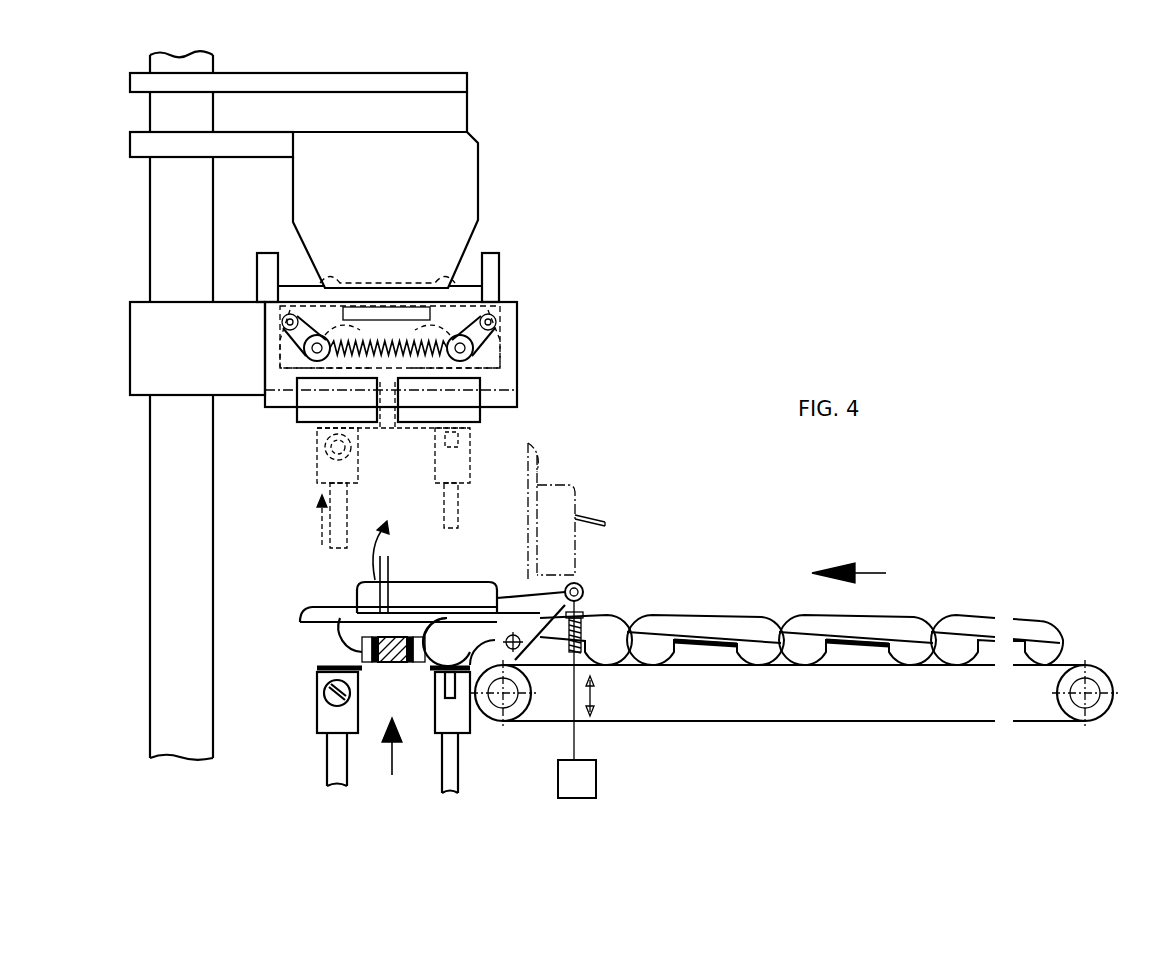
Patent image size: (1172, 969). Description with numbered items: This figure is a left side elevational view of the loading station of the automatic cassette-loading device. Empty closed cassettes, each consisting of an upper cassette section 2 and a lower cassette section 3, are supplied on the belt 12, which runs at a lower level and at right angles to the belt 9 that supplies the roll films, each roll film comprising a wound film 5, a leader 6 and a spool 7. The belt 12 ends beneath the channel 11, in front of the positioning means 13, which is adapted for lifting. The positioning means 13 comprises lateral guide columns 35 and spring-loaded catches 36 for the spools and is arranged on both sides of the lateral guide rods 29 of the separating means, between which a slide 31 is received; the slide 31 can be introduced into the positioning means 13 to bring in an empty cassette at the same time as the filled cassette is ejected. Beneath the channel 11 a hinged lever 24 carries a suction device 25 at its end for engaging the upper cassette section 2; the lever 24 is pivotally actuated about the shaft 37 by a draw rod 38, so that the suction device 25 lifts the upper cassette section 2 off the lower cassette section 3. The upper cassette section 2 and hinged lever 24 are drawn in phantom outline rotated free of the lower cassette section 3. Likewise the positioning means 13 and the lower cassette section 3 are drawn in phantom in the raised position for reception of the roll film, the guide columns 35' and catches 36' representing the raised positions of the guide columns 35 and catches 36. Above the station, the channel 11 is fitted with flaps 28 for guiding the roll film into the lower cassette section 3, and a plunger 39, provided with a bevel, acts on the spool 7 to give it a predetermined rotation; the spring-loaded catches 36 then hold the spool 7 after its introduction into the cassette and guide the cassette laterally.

The upper cassette section 2 is at (340, 622).
The lower cassette section 3 is at (330, 650).
The wound film 5 is at (470, 325).
The leader 6 is at (378, 340).
The spool 7 is at (342, 335).
The belt 9 is at (372, 412).
The channel 11 is at (533, 272).
The belt 12 is at (694, 724).
The positioning means 13 is at (482, 492).
The hinged lever 24 is at (595, 506).
The suction device 25 is at (388, 600).
The flaps 28 is at (282, 362).
The lateral guide rods 29 is at (420, 664).
The slide 31 is at (393, 663).
The lateral guide columns 35 is at (365, 610).
The holding finger (raised position) 35' is at (302, 515).
The spring-loaded catches 36 is at (354, 673).
The support strip (raised position) 36' is at (310, 459).
The shaft 37 is at (583, 585).
The draw rod 38 is at (583, 628).
The plunger 39 is at (413, 272).